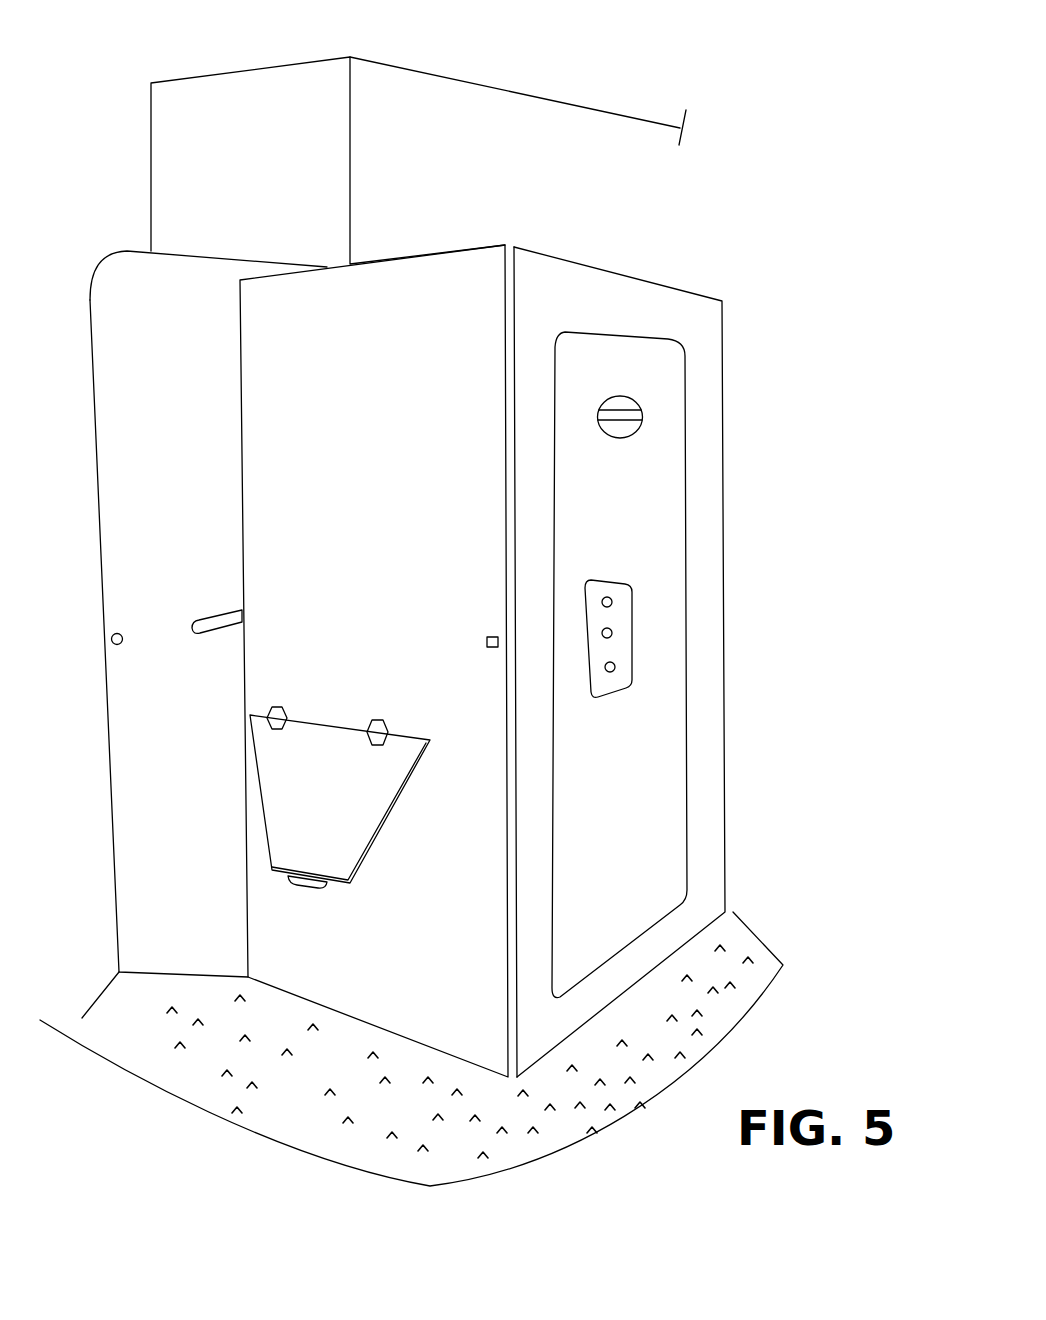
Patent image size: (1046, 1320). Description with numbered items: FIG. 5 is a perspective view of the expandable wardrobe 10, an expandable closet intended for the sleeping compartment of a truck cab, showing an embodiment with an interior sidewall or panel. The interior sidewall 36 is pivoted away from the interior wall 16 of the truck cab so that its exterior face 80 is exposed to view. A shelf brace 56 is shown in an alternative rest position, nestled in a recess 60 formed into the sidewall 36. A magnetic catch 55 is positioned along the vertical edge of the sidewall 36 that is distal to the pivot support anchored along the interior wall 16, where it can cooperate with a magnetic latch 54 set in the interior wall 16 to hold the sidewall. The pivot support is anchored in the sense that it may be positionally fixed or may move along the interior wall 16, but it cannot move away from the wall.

The expandable wardrobe 10 is at (512, 650).
The interior wall 16 is at (195, 450).
The interior sidewall 36 is at (438, 253).
The magnetic latch 54 is at (121, 634).
The magnetic catch 55 is at (487, 637).
The shelf brace 56 is at (350, 823).
The recess 60 is at (313, 886).
The exterior face 80 is at (394, 506).